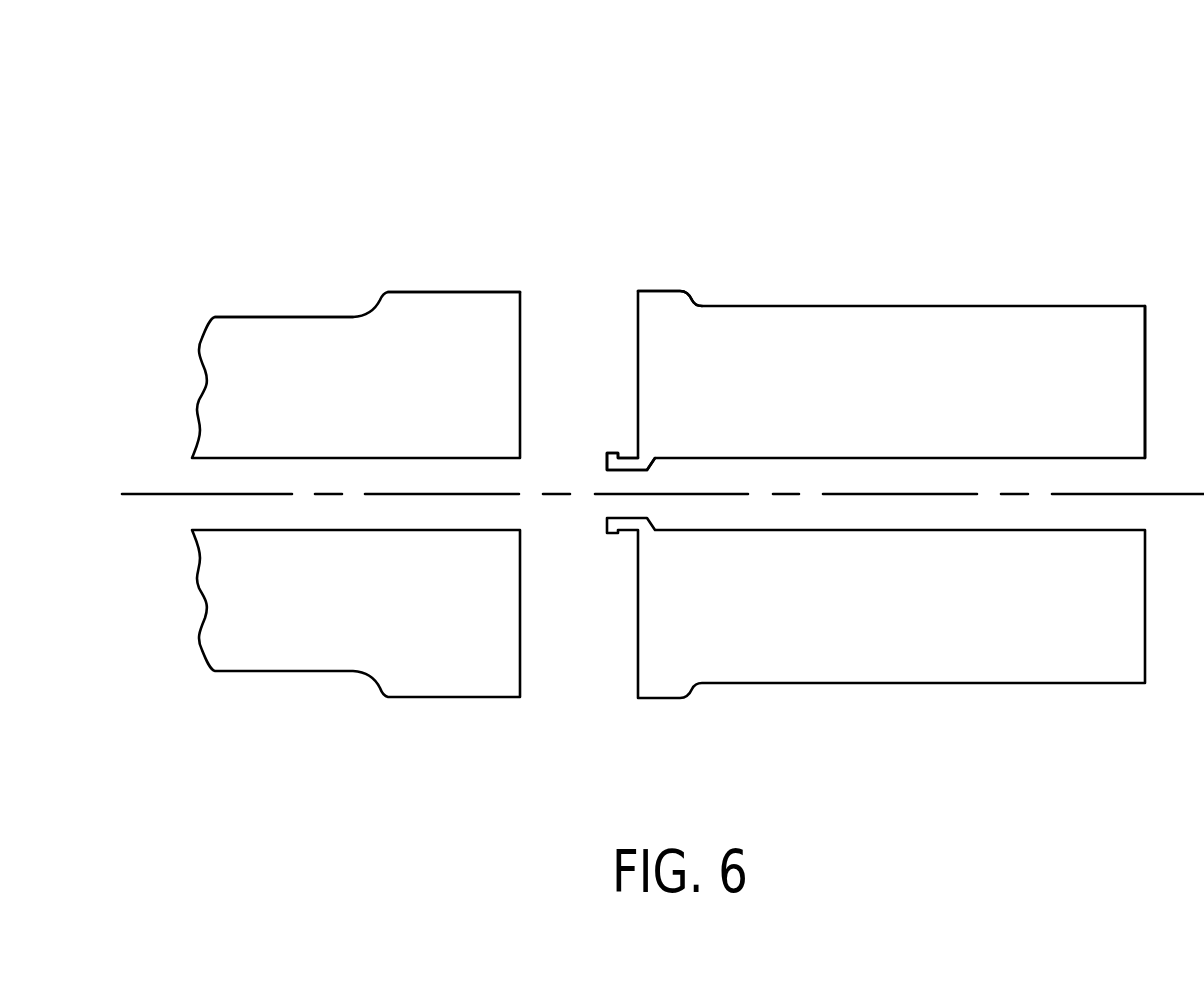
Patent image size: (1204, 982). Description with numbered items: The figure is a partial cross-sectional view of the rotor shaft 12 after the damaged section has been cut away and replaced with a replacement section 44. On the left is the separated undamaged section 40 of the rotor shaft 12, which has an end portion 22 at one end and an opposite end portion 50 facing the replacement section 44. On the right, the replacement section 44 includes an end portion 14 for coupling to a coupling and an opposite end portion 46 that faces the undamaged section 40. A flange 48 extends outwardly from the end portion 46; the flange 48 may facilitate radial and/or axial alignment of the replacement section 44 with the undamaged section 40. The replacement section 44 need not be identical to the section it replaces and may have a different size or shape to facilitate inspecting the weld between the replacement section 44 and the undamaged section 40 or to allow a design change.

The rotor shaft 12 is at (626, 171).
The end portion 14 is at (1130, 347).
The undamaged section end portion 22 is at (213, 350).
The undamaged section 40 is at (352, 403).
The replacement section 44 is at (826, 398).
The end portion 46 is at (656, 358).
The flange 48 is at (629, 450).
The end portion 50 is at (502, 347).